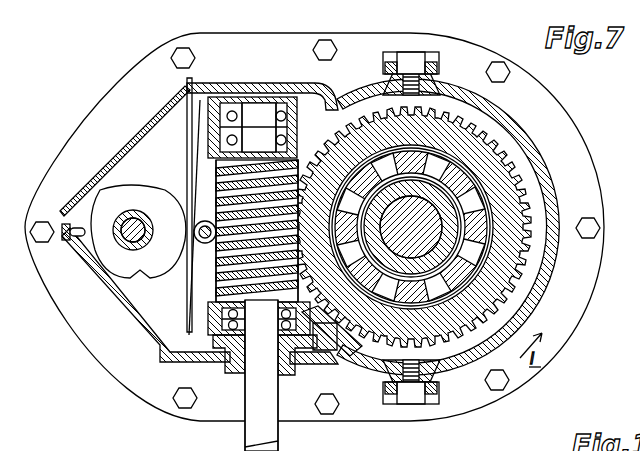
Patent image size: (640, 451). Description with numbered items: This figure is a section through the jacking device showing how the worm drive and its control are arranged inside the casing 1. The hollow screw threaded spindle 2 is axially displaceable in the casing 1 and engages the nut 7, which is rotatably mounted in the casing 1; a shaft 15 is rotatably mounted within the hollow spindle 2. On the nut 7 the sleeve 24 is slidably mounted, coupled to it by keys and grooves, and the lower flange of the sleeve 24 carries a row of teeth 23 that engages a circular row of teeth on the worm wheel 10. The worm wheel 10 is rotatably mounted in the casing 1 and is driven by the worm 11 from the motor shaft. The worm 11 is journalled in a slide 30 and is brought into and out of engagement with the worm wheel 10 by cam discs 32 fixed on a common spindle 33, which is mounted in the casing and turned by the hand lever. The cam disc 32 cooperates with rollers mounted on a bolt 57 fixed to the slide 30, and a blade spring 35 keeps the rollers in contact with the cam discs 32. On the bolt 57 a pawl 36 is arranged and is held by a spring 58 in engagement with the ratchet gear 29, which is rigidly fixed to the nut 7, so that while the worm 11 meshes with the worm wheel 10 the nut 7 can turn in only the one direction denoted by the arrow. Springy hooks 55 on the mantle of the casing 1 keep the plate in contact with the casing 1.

The casing 1 is at (505, 120).
The hollow screw threaded spindle 2 is at (467, 207).
The nut 7 is at (427, 242).
The worm wheel 10 is at (487, 308).
The worm 11 is at (220, 180).
The shaft 15 is at (480, 268).
The row of teeth 23 is at (316, 282).
The sleeve 24 is at (477, 182).
The ratchet gear 29 is at (313, 347).
The slide 30 is at (258, 87).
The cam disc 32 is at (97, 258).
The spindle 33 is at (118, 210).
The blade spring 35 is at (183, 122).
The pawl 36 is at (205, 255).
The springy hooks 55 is at (432, 63).
The bolt 57 is at (193, 226).
The spring 58 is at (260, 302).